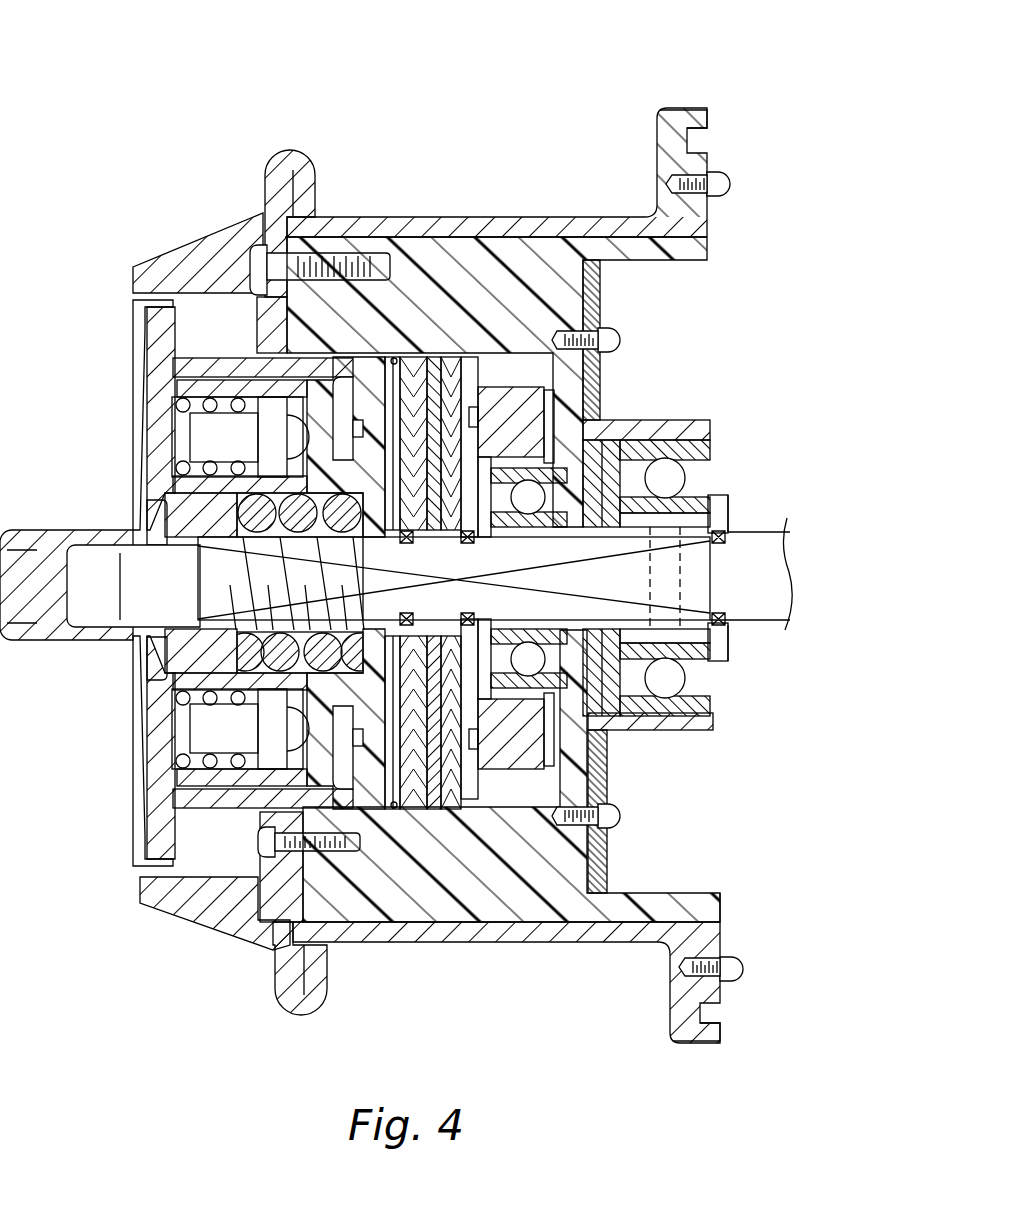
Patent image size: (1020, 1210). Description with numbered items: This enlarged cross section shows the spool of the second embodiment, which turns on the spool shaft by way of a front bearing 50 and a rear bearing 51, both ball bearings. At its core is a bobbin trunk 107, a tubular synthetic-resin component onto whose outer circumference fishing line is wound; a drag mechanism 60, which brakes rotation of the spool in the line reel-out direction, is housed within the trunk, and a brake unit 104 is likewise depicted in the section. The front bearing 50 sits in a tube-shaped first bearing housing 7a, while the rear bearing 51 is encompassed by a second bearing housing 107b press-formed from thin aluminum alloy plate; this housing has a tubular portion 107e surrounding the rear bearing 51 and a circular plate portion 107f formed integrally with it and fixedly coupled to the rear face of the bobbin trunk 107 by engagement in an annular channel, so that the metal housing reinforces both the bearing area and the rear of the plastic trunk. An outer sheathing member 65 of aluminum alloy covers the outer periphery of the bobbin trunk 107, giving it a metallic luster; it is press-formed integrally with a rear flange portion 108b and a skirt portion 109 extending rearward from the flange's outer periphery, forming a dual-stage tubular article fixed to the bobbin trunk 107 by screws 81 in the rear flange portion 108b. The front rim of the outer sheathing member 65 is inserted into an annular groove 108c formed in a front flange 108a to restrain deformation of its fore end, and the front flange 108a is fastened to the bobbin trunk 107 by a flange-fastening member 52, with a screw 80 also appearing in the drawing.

The flange-fastening member 52 is at (185, 243).
The front flange 108a is at (272, 148).
The annular groove 108c is at (338, 217).
The outer sheathing member 65 is at (385, 225).
The brake unit 104 is at (502, 494).
The bobbin trunk 107 is at (482, 281).
The first bearing housing 7a is at (523, 463).
The rear flange portion 108b is at (665, 155).
The skirt portion 109 is at (688, 108).
The screws 81 is at (719, 183).
The screw 80 is at (608, 338).
The second bearing housing 107b is at (680, 399).
The circular plate portion 107f is at (600, 378).
The tubular portion 107e is at (708, 424).
The front bearing 50 is at (517, 522).
The drag mechanism 60 is at (491, 792).
The rear bearing 51 is at (642, 737).